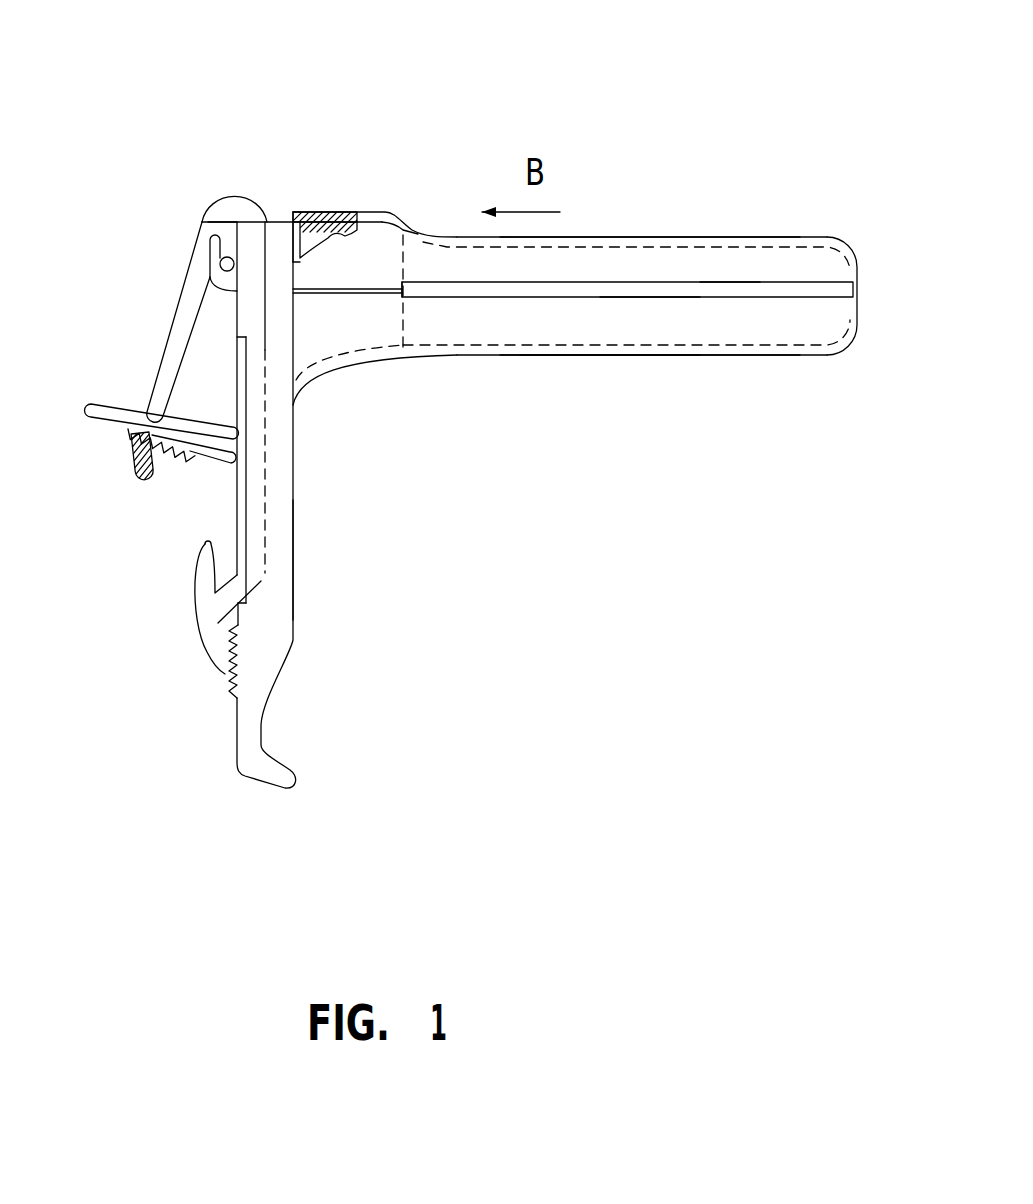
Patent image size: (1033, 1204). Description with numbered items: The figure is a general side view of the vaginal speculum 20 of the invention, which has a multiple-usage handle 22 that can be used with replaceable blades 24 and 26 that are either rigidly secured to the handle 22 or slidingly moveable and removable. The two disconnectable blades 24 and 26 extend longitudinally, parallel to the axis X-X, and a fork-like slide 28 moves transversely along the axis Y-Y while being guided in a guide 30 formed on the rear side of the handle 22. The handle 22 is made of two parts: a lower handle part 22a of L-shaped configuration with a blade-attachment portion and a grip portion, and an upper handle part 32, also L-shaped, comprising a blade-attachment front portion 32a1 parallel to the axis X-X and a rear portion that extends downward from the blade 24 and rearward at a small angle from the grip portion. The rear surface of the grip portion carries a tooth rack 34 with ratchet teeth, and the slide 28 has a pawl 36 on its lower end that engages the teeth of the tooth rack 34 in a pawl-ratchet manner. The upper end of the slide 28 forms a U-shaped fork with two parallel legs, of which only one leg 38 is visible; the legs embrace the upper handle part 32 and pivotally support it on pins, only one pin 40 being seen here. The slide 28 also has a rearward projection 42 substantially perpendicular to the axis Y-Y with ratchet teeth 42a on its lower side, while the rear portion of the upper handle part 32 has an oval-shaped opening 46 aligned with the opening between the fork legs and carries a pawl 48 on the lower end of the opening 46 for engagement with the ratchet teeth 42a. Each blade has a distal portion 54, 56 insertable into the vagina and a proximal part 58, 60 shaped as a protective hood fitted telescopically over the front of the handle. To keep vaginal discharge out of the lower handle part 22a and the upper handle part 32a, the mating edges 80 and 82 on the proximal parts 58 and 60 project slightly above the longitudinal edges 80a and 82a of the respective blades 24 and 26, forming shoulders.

The vaginal speculum 20 is at (550, 122).
The handle 22 is at (346, 655).
The lower handle part 22a is at (294, 562).
The blade 24 is at (598, 212).
The blade 26 is at (606, 402).
The fork-like slide 28 is at (236, 490).
The guide 30 is at (247, 513).
The upper handle part 32 is at (313, 220).
The upper handle part 32a is at (267, 255).
The blade-attachment front portion 32a1 is at (246, 124).
The tooth rack 34 is at (227, 687).
The pawl 36 is at (207, 648).
The leg 38 is at (257, 455).
The pin 40 is at (221, 261).
The rearward projection 42 is at (107, 403).
The ratchet teeth 42a is at (247, 473).
The oval-shaped opening 46 is at (157, 412).
The pawl 48 is at (128, 440).
The distal portion 54 is at (777, 232).
The distal portion 56 is at (777, 358).
The proximal part 58 is at (357, 205).
The proximal part 60 is at (361, 367).
The mating edge 80 is at (352, 288).
The longitudinal edge 80a is at (717, 283).
The mating edge 82 is at (385, 288).
The longitudinal edge 82a is at (643, 290).